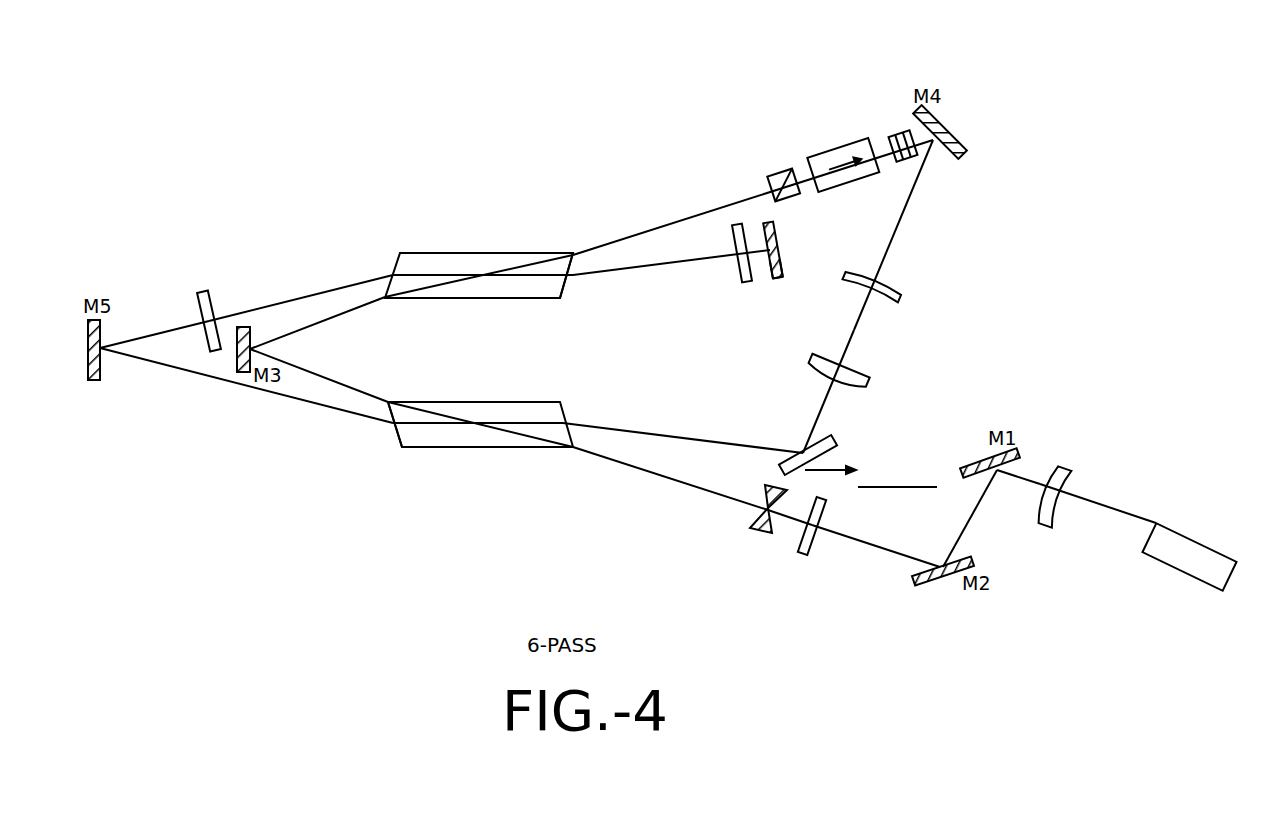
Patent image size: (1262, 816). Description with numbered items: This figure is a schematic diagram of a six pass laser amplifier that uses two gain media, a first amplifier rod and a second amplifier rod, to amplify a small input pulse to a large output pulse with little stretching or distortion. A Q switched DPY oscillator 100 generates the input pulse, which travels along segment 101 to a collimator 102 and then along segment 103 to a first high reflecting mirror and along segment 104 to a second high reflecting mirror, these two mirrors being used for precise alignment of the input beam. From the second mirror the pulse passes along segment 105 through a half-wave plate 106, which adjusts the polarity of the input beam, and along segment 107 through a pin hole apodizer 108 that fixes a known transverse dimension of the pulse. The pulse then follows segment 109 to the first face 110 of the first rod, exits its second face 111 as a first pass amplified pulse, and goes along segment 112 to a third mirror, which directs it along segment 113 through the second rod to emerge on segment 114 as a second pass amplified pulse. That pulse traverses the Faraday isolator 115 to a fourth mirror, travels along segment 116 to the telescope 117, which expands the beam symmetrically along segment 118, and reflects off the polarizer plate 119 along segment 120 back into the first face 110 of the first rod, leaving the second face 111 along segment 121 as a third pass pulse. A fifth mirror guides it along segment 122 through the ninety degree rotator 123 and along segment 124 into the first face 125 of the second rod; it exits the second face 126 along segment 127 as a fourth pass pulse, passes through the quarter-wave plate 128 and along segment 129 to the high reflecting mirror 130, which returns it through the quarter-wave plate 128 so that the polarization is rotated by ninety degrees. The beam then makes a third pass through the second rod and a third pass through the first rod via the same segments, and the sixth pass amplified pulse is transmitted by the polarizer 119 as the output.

The Q switched DPY oscillator 100 is at (1197, 540).
The segment 101 is at (1113, 518).
The collimator 102 is at (1072, 490).
The segment 103 is at (1021, 480).
The segment 104 is at (962, 530).
The segment 105 is at (893, 553).
The half-wave plate 106 is at (810, 549).
The segment 107 is at (790, 517).
The pin hole apodizer 108 is at (768, 495).
The segment 109 is at (650, 470).
The first face of amplifier rod 1 110 is at (567, 413).
The second face of amplifier rod 1 111 is at (397, 437).
The segment 112 is at (315, 374).
The segment 113 is at (310, 322).
The segment 114 is at (657, 228).
The Faraday isolator 115 is at (837, 82).
The segment 116 is at (899, 223).
The telescope 117 is at (943, 354).
The segment 118 is at (816, 402).
The polarizer plate 119 is at (833, 442).
The segment 120 is at (650, 432).
The segment 121 is at (297, 399).
The segment 122 is at (187, 324).
The 90 degree rotator 123 is at (217, 303).
The segment 124 is at (363, 280).
The first face of amplifier rod 2 125 is at (391, 272).
The second face of amplifier rod 2 126 is at (566, 285).
The segment 127 is at (648, 267).
The quarter-wave plate 128 is at (736, 236).
The segment 129 is at (766, 265).
The high reflecting mirror 130 is at (778, 225).